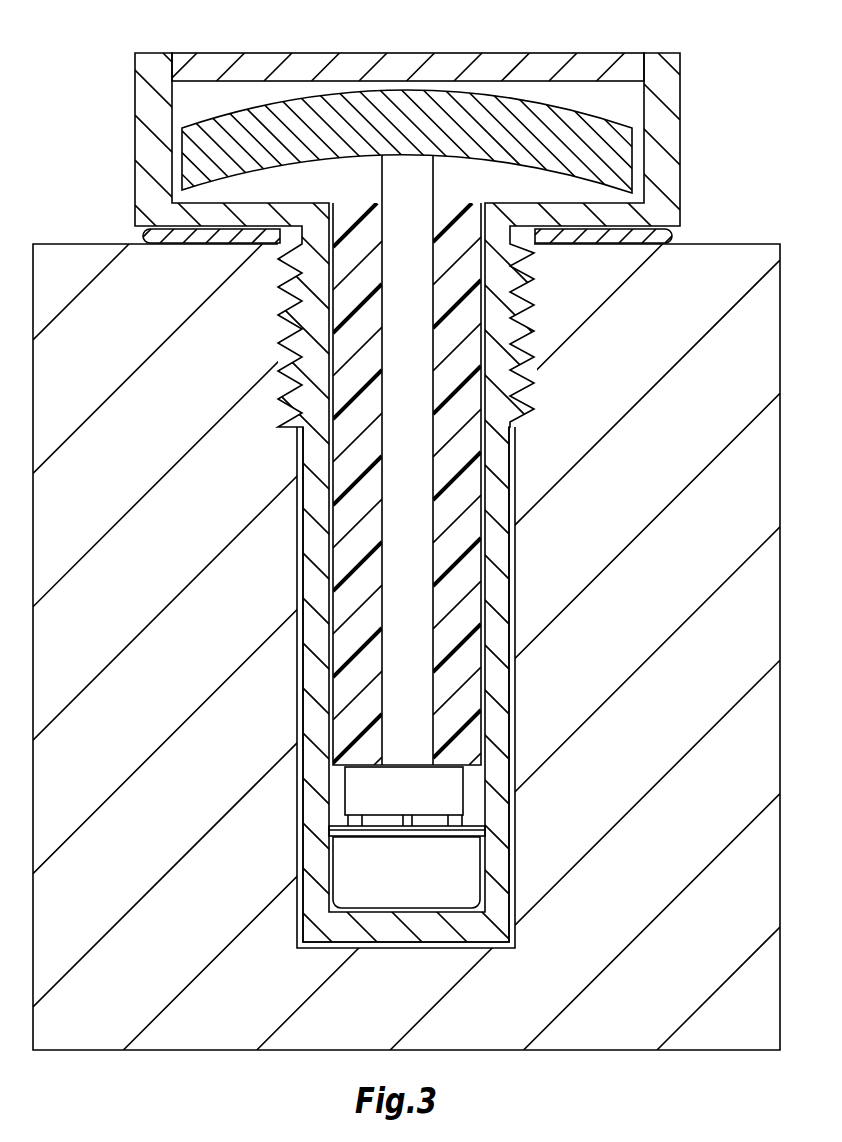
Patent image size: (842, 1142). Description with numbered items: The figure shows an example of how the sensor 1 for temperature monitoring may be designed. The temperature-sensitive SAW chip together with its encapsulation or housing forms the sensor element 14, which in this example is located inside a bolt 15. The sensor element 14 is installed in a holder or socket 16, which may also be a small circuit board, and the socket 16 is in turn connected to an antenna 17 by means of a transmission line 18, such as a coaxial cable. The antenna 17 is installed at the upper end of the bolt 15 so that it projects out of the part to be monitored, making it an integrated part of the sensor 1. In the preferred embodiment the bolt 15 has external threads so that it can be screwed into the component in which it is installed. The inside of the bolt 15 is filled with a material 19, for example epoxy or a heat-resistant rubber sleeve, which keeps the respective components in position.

The sensor 1 is at (740, 134).
The sensor element 14 is at (433, 892).
The bolt 15 is at (498, 893).
The holder or socket 16 is at (452, 789).
The antenna 17 is at (430, 105).
The transmission line 18 is at (423, 185).
The material 19 is at (368, 238).